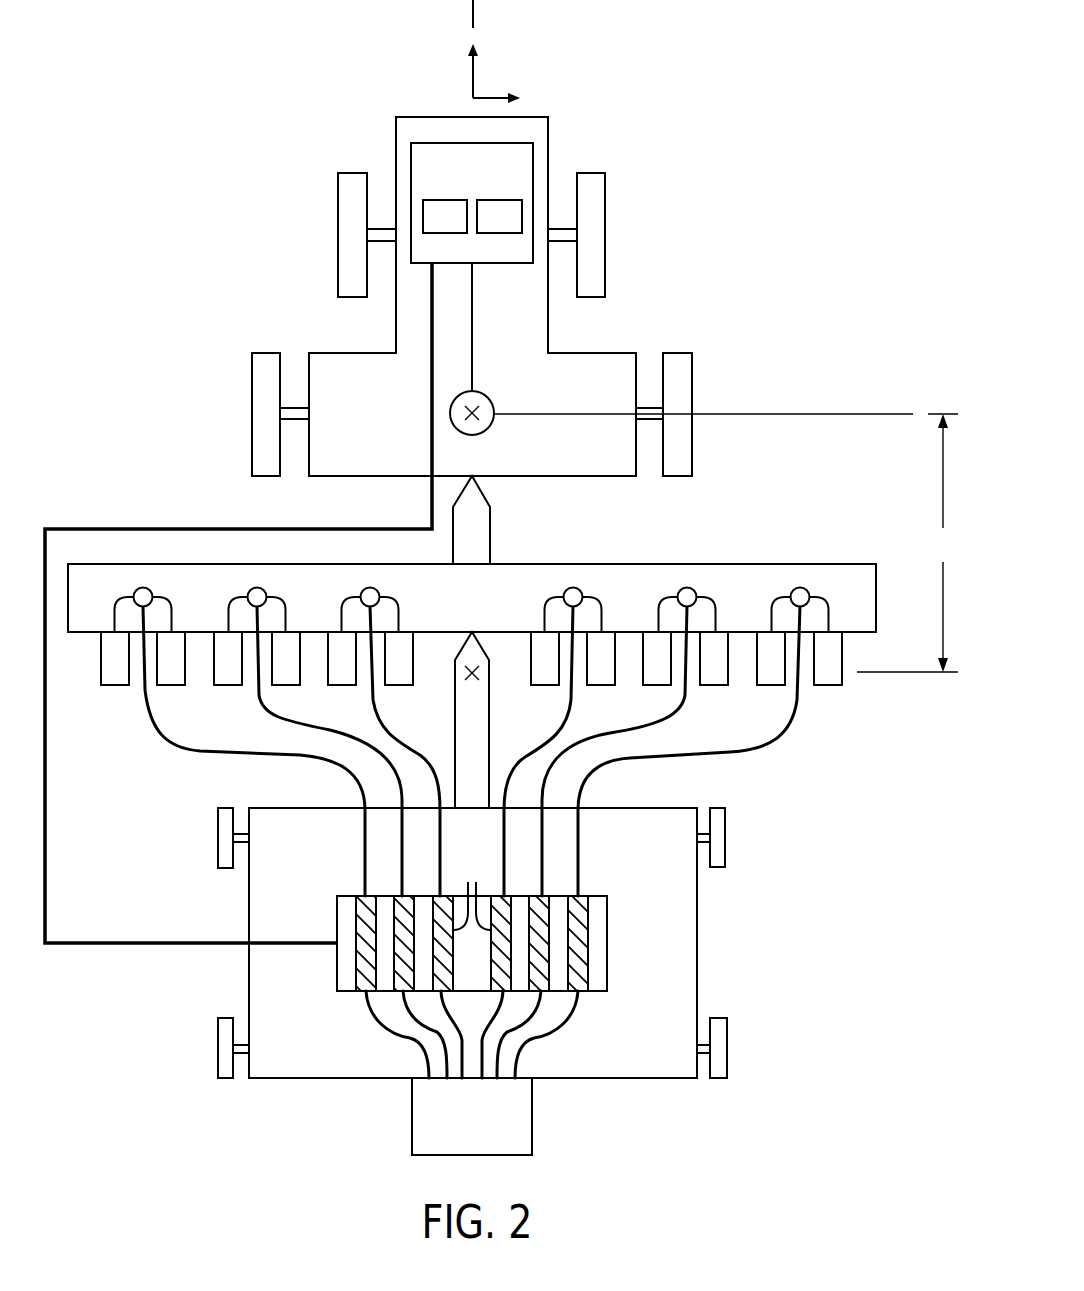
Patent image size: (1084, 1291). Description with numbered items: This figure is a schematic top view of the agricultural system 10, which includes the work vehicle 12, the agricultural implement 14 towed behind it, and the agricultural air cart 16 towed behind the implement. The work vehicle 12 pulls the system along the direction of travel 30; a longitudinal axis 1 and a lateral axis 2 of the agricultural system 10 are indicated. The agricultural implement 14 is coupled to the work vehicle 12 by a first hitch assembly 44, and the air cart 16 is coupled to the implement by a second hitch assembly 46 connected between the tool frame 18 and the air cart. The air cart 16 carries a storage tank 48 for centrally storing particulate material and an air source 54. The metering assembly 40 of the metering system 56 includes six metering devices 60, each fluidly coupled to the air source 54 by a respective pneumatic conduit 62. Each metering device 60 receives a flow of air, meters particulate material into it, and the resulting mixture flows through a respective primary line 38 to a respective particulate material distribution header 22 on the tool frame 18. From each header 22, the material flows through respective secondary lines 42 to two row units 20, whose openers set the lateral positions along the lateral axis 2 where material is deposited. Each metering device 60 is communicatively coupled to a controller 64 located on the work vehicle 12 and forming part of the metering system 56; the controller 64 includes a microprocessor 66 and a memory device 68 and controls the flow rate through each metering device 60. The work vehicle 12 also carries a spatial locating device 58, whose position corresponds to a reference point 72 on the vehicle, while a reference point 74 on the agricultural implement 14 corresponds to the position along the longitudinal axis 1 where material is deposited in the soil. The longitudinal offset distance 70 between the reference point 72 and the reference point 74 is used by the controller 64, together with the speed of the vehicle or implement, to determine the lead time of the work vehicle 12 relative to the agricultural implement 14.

The longitudinal axis 1 is at (470, 78).
The lateral axis 2 is at (493, 98).
The agricultural system 10 is at (672, 270).
The work vehicle 12 is at (420, 117).
The agricultural implement 14 is at (830, 548).
The agricultural air cart 16 is at (697, 940).
The tool frame 18 is at (641, 564).
The row unit 20 is at (114, 687).
The particulate material distribution header 22 is at (256, 587).
The direction of travel 30 is at (473, 2).
The primary line 38 is at (338, 767).
The metering assembly 40 is at (607, 940).
The secondary line 42 is at (114, 617).
The first hitch assembly 44 is at (490, 515).
The second hitch assembly 46 is at (492, 680).
The storage tank 48 is at (657, 1022).
The air source 54 is at (532, 1118).
The metering system 56 is at (785, 768).
The spatial locating device 58 is at (478, 437).
The metering device 60 is at (472, 889).
The pneumatic conduit 62 is at (400, 1037).
The controller 64 is at (533, 157).
The microprocessor 66 is at (432, 233).
The memory device 68 is at (500, 233).
The longitudinal offset distance 70 is at (726, 543).
The reference point 72 is at (475, 400).
The reference point 74 is at (458, 675).